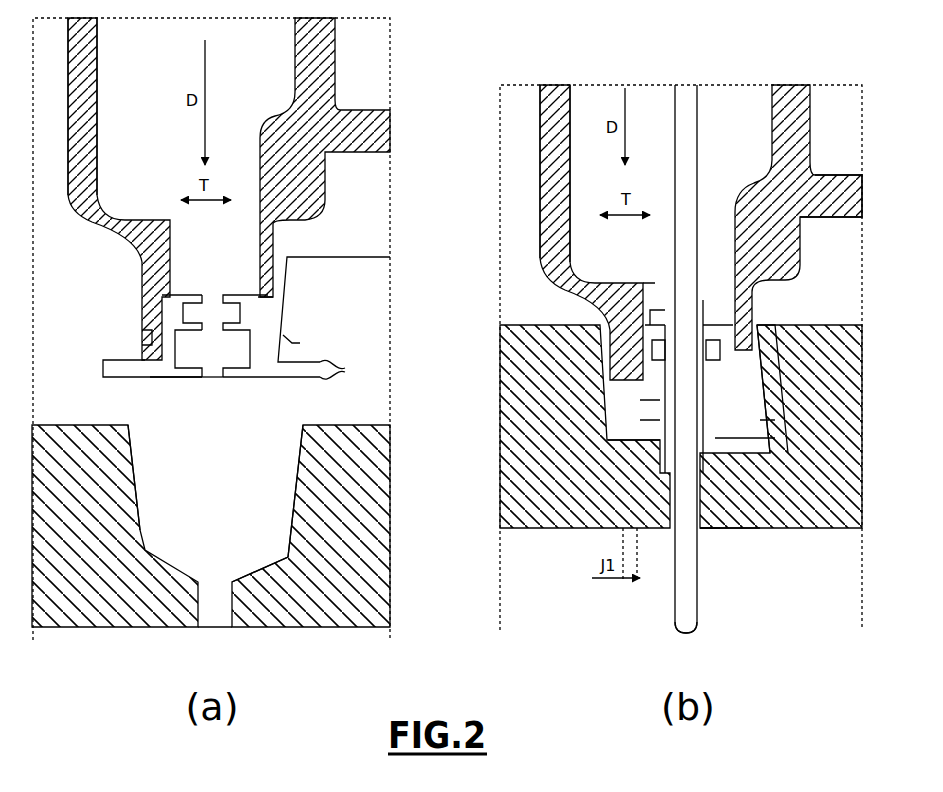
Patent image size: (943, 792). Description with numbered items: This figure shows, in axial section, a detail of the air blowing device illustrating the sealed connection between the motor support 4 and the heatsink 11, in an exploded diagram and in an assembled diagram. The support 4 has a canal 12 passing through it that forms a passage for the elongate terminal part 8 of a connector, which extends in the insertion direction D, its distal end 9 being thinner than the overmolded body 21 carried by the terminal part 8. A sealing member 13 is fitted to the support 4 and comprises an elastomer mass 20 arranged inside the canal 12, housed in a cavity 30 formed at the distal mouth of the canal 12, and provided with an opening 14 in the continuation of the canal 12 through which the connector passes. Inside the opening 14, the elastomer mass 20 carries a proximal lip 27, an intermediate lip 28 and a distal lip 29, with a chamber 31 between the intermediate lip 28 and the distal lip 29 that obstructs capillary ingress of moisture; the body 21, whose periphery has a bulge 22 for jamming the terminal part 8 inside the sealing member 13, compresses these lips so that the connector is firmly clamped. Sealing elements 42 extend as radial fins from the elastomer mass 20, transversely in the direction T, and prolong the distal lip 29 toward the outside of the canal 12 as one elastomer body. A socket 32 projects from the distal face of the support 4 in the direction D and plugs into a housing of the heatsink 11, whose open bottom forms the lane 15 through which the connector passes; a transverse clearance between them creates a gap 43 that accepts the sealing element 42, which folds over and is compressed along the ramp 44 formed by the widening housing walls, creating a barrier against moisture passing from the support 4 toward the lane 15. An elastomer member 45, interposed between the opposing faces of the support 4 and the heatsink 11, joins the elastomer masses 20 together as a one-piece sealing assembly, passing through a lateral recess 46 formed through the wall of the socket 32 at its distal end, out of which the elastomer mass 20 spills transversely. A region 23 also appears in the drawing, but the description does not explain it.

The support 4 is at (56, 206).
The terminal part 8 is at (700, 151).
The distal end 9 is at (675, 612).
The heatsink 11 is at (341, 646).
The canal 12 is at (190, 243).
The sealing member 13 is at (320, 304).
The opening 14 is at (213, 379).
The lane 15 is at (215, 624).
The elastomer mass 20 is at (292, 343).
The body 21 is at (707, 328).
The bulge 22 is at (688, 340).
The channel 23 is at (199, 510).
The proximal lip 27 is at (191, 295).
The intermediate lip 28 is at (463, 361).
The distal lip 29 is at (180, 378).
The cavity 30 is at (147, 336).
The chamber 31 is at (660, 401).
The socket 32 is at (68, 100).
The sealing element 42 is at (103, 360).
The gap 43 is at (604, 335).
The ramp 44 is at (297, 496).
The elastomer member 45 is at (350, 203).
The lateral recess 46 is at (262, 310).